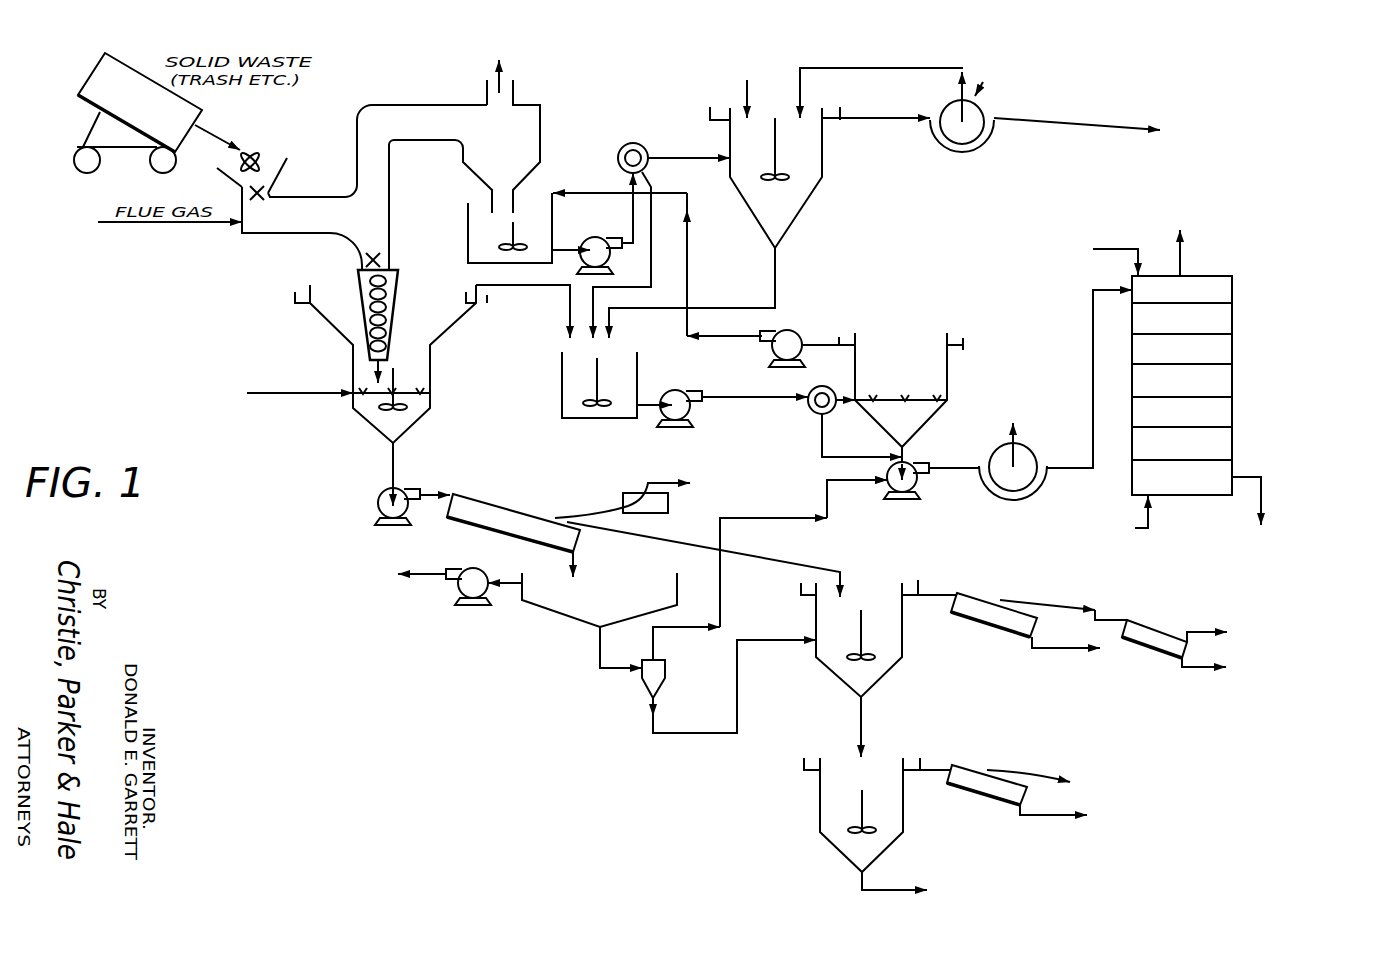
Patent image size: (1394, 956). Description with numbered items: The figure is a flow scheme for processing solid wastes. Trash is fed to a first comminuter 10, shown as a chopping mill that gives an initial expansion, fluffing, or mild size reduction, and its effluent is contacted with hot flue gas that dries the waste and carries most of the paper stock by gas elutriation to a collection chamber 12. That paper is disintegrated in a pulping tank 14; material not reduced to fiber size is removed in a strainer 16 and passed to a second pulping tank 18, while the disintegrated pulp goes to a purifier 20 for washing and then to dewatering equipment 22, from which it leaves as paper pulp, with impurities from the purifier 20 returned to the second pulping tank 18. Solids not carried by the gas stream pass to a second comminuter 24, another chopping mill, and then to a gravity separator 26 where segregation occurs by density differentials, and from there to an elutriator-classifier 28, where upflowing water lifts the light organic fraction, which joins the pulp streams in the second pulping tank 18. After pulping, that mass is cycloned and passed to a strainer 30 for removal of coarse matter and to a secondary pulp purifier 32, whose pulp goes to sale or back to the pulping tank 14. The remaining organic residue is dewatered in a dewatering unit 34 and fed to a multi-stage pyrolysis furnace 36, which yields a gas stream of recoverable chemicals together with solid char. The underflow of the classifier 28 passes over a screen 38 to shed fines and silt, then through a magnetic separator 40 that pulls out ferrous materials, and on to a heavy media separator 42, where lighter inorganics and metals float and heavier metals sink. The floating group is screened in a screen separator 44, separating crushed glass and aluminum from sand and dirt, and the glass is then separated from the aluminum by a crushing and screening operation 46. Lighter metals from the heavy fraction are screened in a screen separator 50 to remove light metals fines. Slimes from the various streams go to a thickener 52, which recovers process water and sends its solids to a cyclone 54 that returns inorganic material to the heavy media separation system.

The first comminuter 10 is at (267, 234).
The collection chamber 12 is at (540, 130).
The pulping tank 14 is at (553, 226).
The strainer 16 is at (640, 146).
The second pulping tank 18 is at (562, 387).
The purifier 20 is at (793, 222).
The dewatering equipment 22 is at (952, 97).
The second comminuter 24 is at (388, 252).
The gravity separator 26 is at (397, 300).
The elutriator-classifier 28 is at (432, 393).
The strainer 30 is at (826, 388).
The secondary pulp purifier 32 is at (949, 400).
The dewatering unit 34 is at (1035, 448).
The pyrolysis furnace 36 is at (1246, 436).
The screen 38 is at (514, 508).
The magnetic separator 40 is at (626, 485).
The heavy media separator 42 is at (898, 662).
The screen separator 44 is at (962, 617).
The crushing and screening operation 46 is at (1136, 620).
The screen separator 50 is at (977, 797).
The thickener 52 is at (562, 617).
The cyclone 54 is at (667, 673).